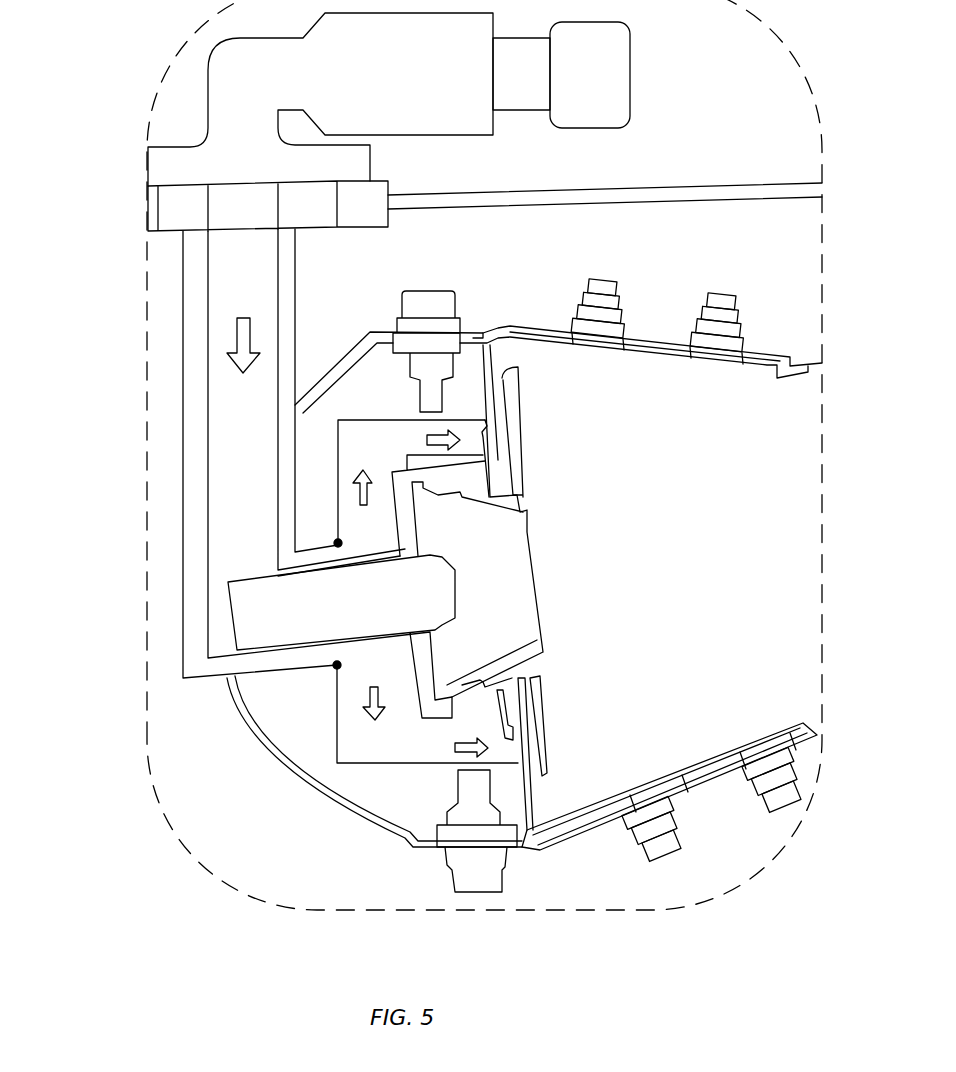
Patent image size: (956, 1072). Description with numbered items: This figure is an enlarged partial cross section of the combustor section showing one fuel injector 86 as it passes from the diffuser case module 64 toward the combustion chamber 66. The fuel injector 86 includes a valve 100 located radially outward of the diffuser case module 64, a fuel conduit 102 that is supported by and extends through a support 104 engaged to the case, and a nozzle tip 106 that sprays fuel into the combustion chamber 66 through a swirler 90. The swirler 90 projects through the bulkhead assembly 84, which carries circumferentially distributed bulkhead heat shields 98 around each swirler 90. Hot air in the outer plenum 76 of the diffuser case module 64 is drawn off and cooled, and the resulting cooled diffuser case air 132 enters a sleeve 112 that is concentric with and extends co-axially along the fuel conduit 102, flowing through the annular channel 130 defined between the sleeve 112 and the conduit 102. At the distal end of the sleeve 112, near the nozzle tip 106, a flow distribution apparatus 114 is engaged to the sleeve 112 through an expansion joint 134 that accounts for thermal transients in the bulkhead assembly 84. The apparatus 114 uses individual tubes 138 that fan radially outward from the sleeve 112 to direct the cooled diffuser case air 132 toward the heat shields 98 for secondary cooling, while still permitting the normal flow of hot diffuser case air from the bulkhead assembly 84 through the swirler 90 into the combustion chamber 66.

The diffuser case module 64 is at (698, 183).
The combustion chamber 66 is at (710, 493).
The outer plenum 76 is at (577, 264).
The bulkhead assembly 84 is at (231, 714).
The fuel injector 86 is at (118, 532).
The swirler 90 is at (530, 524).
The bulkhead heat shield 98 is at (500, 448).
The valve 100 is at (377, 84).
The fuel conduit 102 is at (265, 320).
The support 104 is at (173, 165).
The nozzle tip 106 is at (455, 597).
The sleeve 112 is at (181, 432).
The flow distribution apparatus 114 is at (333, 728).
The annular channel 130 is at (193, 292).
The cooled diffuser case air 132 is at (242, 342).
The expansion joint 134 is at (337, 543).
The tube 138 is at (465, 418).